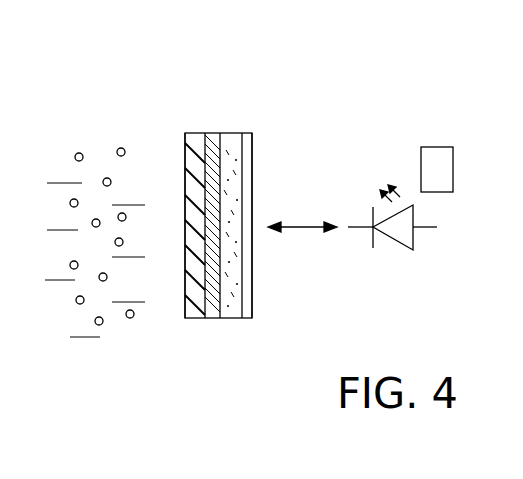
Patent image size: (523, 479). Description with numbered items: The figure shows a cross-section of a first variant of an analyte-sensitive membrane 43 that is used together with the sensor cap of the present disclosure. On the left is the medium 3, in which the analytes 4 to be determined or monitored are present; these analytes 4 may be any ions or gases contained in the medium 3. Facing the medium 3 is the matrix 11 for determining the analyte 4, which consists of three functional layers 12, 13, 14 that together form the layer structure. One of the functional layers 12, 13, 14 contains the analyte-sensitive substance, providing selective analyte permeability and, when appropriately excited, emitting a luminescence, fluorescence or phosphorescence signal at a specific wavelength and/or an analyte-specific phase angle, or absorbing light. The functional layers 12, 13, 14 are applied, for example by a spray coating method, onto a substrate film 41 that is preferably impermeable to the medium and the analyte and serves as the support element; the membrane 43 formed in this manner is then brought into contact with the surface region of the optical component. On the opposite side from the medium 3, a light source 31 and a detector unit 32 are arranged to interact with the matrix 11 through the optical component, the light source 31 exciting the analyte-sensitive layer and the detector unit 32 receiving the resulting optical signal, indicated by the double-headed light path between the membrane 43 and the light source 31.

The medium 3 is at (107, 263).
The analyte 4 is at (80, 153).
The matrix 11 is at (267, 215).
The functional layer 12 is at (228, 313).
The functional layer 13 is at (213, 313).
The functional layer 14 is at (192, 142).
The light source 31 is at (400, 241).
The detector unit 32 is at (435, 157).
The substrate film 41 is at (245, 300).
The membrane 43 is at (137, 367).